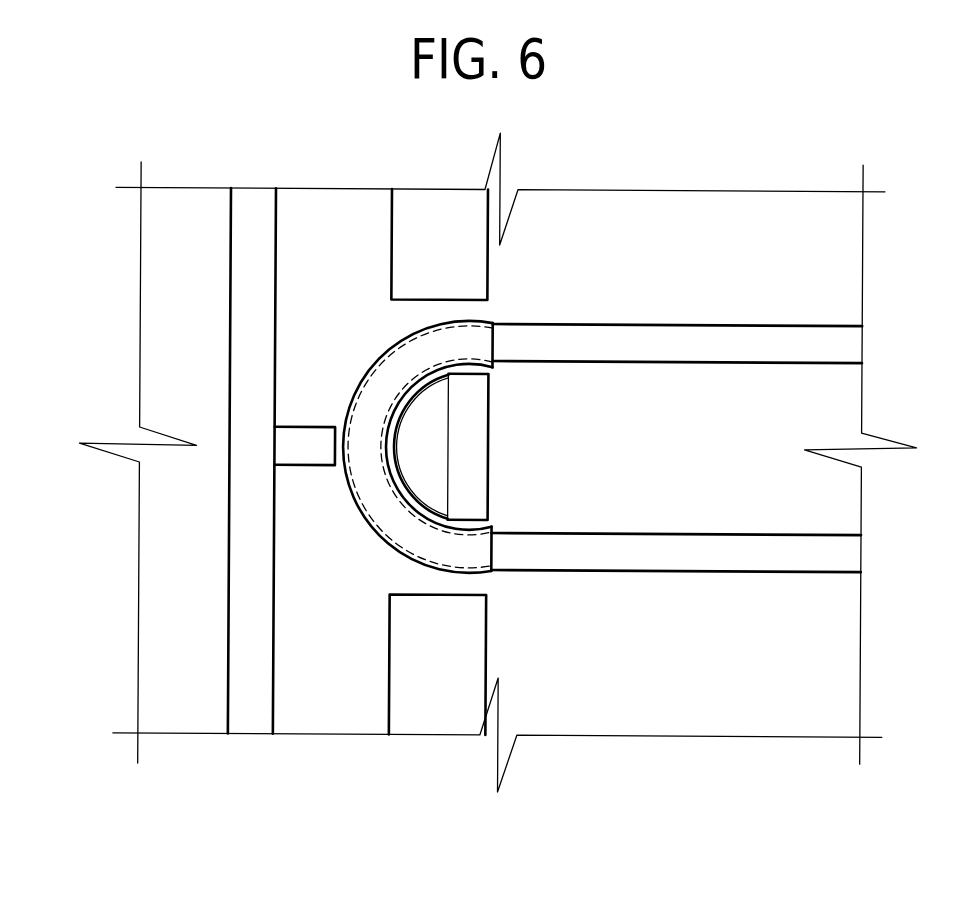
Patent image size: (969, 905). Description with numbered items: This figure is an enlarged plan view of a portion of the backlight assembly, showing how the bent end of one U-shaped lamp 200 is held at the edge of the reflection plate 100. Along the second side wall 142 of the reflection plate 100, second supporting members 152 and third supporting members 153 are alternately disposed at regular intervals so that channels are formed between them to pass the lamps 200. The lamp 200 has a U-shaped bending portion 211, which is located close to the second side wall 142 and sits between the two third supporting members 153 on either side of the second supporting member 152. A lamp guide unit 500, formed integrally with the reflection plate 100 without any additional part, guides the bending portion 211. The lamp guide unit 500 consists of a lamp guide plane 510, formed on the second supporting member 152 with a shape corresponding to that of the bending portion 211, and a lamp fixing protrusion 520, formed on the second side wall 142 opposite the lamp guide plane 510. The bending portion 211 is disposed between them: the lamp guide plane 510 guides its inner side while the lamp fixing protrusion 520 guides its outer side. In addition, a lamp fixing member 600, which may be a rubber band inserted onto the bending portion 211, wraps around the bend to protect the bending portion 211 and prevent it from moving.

The reflection plate 100 is at (213, 645).
The second side wall 142 is at (235, 552).
The second supporting member 152 is at (474, 448).
The third supporting member 153 is at (473, 270).
The lamp 200 is at (682, 337).
The bending portion 211 is at (386, 349).
The lamp guide unit 500 is at (414, 817).
The lamp guide plane 510 is at (388, 447).
The lamp fixing protrusion 520 is at (307, 464).
The lamp fixing member 600 is at (361, 377).